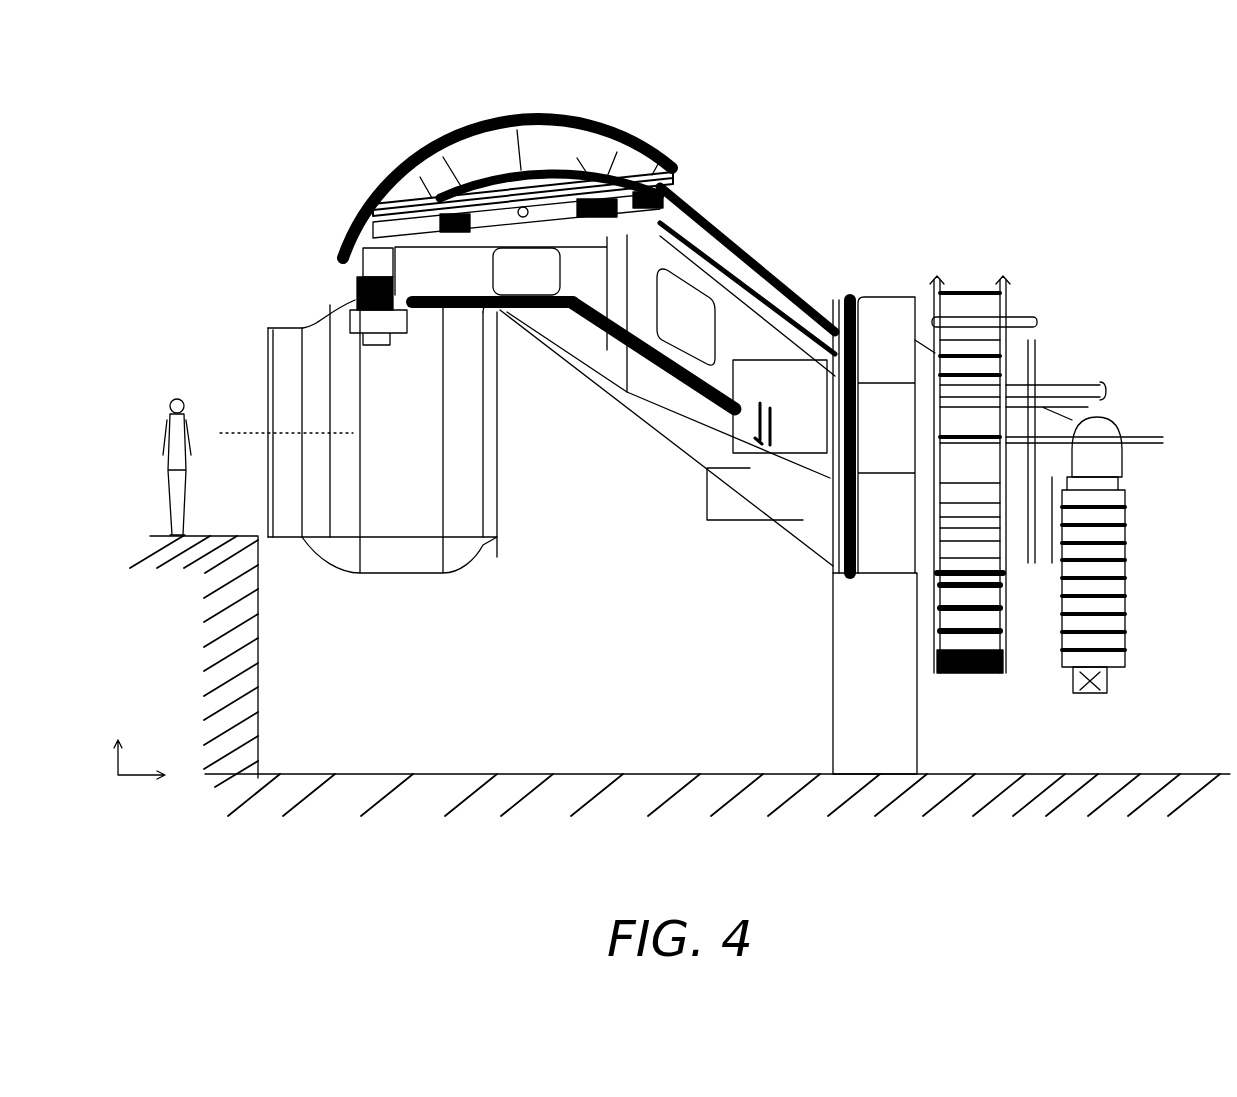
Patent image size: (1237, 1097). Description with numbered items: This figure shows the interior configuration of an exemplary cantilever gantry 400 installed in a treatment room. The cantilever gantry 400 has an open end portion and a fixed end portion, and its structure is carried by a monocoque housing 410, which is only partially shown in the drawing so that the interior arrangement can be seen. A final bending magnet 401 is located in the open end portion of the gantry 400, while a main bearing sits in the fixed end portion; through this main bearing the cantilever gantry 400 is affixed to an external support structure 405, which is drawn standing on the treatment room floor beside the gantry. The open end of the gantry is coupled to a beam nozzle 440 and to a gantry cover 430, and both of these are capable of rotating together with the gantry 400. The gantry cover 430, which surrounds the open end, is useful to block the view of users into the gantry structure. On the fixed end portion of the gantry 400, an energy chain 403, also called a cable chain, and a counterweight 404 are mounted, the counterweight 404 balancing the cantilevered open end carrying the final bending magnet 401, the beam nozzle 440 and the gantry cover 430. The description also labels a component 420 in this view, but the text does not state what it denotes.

The cantilever gantry 400 is at (1072, 184).
The final bending magnet 401 is at (470, 127).
The energy chain 403 is at (972, 673).
The counterweight 404 is at (1122, 547).
The external support structure 405 is at (851, 672).
The monocoque housing 410 is at (742, 232).
The support column 420 is at (897, 295).
The gantry cover 430 is at (308, 308).
The beam nozzle 440 is at (348, 278).